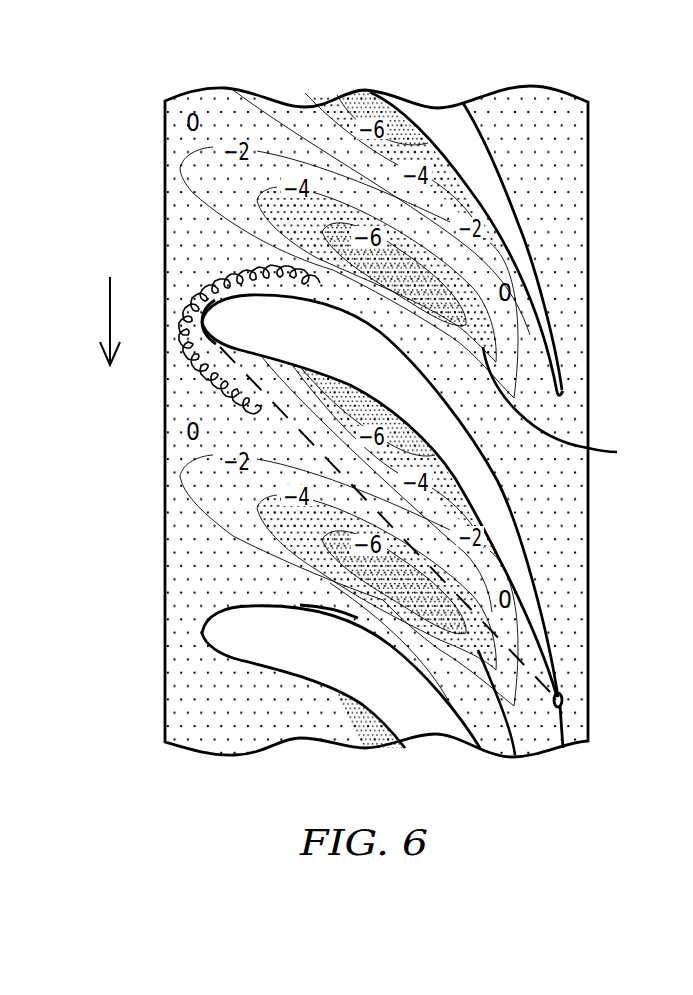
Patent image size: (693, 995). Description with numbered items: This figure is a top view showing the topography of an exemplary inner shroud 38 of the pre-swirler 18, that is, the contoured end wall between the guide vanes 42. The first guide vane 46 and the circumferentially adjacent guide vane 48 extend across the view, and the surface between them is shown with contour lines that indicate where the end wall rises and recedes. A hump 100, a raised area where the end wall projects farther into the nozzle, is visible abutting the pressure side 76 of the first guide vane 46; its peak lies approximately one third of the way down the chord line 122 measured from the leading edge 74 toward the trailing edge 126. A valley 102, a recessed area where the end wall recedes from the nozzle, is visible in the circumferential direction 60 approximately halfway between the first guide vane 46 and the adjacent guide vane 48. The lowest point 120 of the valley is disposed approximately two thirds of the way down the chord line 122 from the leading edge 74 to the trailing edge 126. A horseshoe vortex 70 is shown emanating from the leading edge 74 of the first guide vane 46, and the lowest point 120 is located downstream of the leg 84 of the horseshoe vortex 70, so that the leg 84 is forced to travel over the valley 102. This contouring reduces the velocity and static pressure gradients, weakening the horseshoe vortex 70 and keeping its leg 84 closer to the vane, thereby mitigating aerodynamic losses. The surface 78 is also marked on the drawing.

The pre-swirler 18 is at (427, 421).
The inner shroud 38 is at (548, 212).
The guide vane 42 is at (382, 398).
The first guide vane 46 is at (329, 341).
The circumferentially adjacent guide vane 48 is at (409, 703).
The circumferential direction 60 is at (112, 308).
The horseshoe vortex 70 is at (194, 344).
The leg 84 is at (222, 384).
The leading edge 74 is at (205, 321).
The pressure side 76 is at (385, 403).
The suction side 78 is at (347, 623).
The hump 100 is at (369, 103).
The valley 102 is at (500, 783).
The lowest point 120 is at (437, 302).
The chord line 122 is at (530, 655).
The trailing edge 126 is at (563, 393).